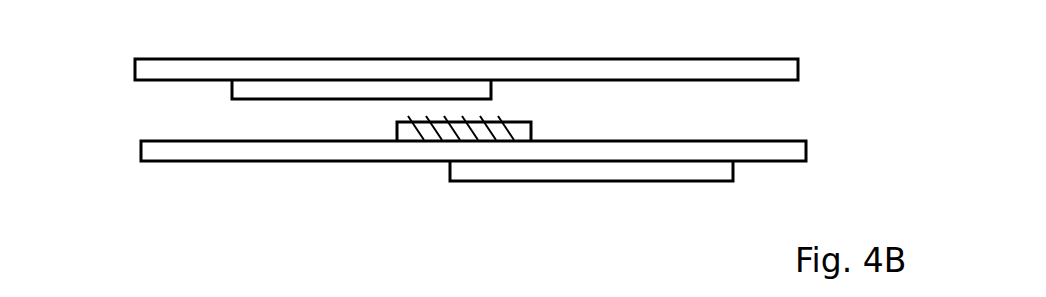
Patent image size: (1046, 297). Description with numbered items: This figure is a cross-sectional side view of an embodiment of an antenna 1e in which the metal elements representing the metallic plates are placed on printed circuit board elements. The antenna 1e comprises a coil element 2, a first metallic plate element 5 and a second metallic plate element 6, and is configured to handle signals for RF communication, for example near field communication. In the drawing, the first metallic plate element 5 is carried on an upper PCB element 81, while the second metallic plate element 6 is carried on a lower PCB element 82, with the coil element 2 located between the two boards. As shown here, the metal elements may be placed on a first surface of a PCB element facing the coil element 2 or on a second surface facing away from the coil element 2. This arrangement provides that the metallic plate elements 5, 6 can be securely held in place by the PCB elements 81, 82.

The antenna 1e is at (92, 49).
The PCB element 81 is at (762, 70).
The first metallic plate element 5 is at (262, 89).
The coil element 2 is at (540, 122).
The PCB element 82 is at (793, 152).
The second metallic plate element 6 is at (637, 170).